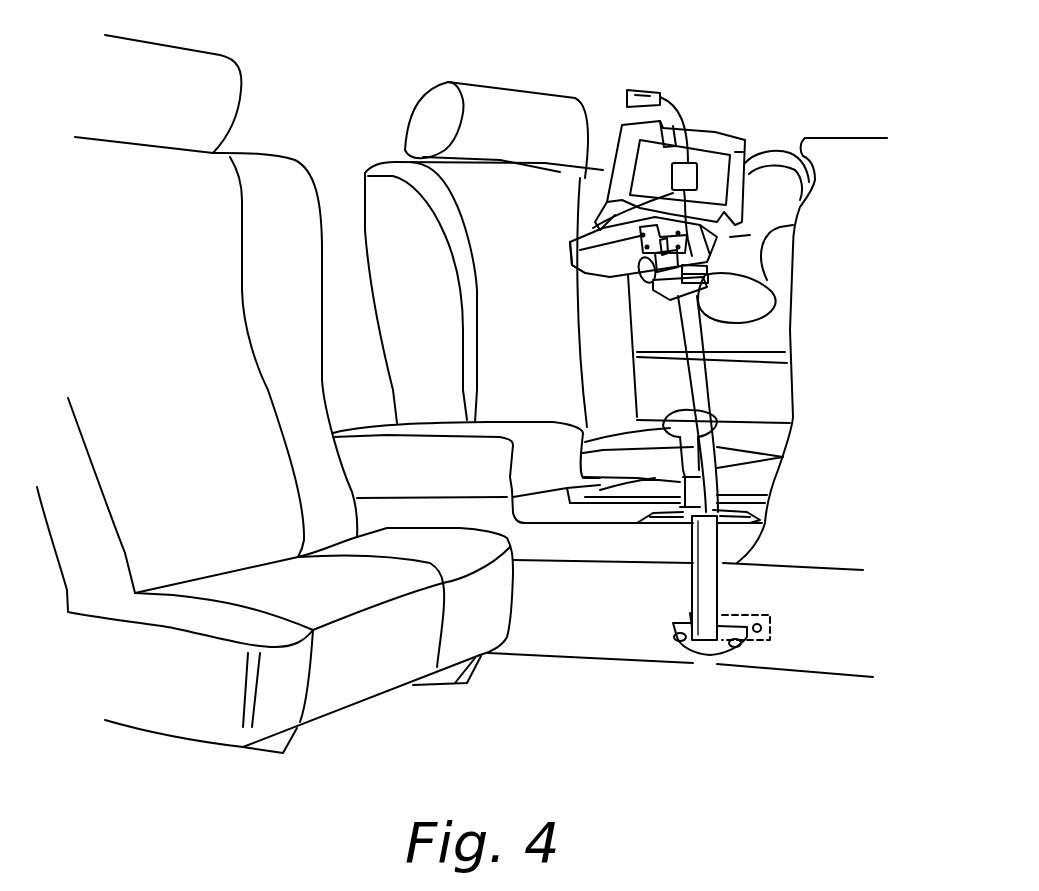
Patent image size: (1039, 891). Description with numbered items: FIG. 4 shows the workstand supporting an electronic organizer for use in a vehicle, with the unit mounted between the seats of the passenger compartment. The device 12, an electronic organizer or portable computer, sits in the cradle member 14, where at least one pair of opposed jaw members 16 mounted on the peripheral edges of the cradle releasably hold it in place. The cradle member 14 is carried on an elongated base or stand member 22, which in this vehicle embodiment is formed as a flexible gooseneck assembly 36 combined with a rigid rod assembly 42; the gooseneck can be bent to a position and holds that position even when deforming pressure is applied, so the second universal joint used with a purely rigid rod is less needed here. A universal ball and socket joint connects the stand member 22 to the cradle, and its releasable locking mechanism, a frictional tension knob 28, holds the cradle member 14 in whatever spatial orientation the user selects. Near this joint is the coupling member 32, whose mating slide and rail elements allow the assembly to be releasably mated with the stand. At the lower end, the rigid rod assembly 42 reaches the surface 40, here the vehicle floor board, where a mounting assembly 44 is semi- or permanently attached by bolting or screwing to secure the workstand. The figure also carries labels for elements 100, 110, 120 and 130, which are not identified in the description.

The device 12 is at (613, 135).
The power plug 120 is at (640, 88).
The opposed jaw members 16 is at (706, 123).
The connector 110 is at (699, 167).
The cradle member 14 is at (733, 168).
The cable 100 is at (691, 210).
The bracket plate 130 is at (604, 229).
The elongated base or stand member 22 is at (690, 251).
The frictional tension knob 28 is at (641, 298).
The coupling member 32 is at (719, 285).
The flexible gooseneck assembly 36 is at (716, 383).
The surface 40 is at (636, 626).
The rigid rod assembly 42 is at (727, 588).
The mounting assembly 44 is at (749, 653).